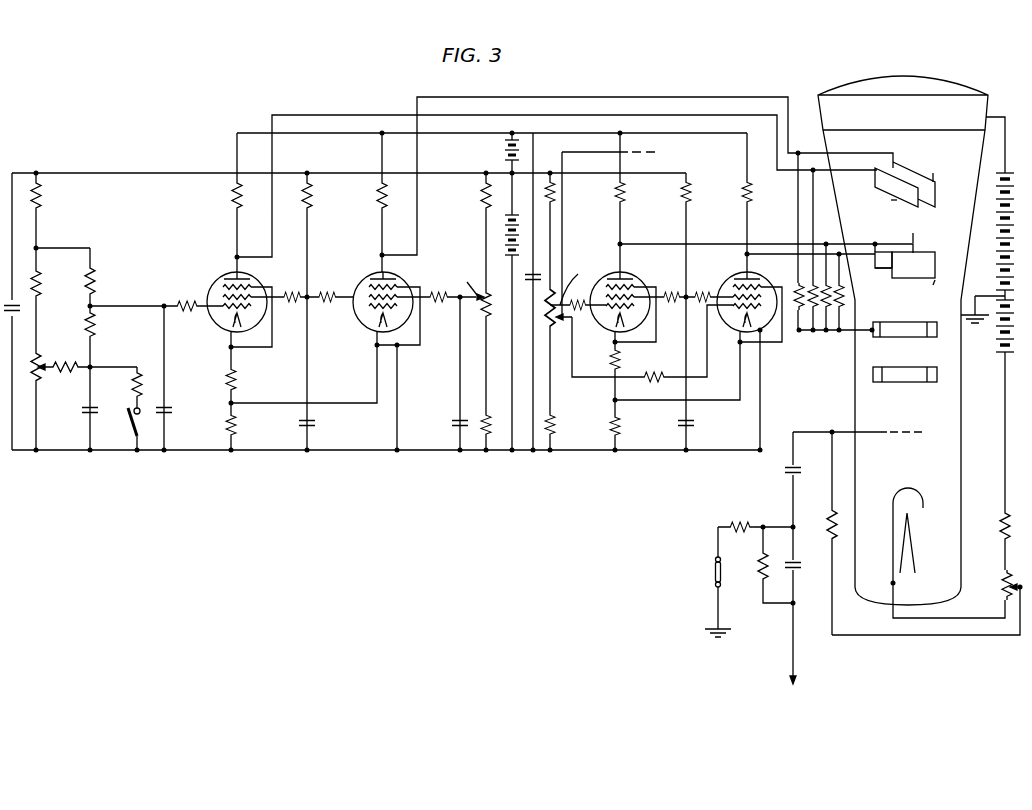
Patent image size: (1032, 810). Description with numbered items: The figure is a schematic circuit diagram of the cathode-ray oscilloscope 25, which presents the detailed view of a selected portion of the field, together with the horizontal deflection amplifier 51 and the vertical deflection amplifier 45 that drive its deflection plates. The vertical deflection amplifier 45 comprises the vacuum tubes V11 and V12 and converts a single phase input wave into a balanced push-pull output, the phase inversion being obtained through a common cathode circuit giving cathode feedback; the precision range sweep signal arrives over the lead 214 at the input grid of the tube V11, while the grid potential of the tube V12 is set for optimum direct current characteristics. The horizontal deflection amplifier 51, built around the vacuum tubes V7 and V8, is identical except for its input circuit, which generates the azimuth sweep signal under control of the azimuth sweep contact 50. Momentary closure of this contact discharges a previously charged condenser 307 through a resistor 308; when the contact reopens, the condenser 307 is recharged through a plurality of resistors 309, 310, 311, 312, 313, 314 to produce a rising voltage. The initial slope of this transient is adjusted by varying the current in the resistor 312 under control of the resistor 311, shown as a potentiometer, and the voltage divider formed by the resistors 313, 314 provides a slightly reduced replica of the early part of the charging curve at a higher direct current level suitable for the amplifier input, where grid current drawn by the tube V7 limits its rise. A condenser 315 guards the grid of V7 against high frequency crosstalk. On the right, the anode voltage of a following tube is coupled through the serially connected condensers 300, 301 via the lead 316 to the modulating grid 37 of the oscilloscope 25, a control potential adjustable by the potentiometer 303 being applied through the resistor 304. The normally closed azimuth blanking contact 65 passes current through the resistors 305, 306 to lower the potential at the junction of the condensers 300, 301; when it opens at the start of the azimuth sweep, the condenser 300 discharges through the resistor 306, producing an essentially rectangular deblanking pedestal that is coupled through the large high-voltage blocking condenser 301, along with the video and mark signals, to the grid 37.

The resistor 309 is at (40, 201).
The resistor 310 is at (42, 283).
The resistor 313 is at (96, 283).
The resistor 314 is at (96, 323).
The resistor 312 is at (77, 359).
The resistor 311 is at (42, 381).
The condenser 307 is at (82, 413).
The resistor 308 is at (142, 375).
The azimuth sweep contact 50 is at (130, 426).
The condenser 315 is at (171, 409).
The horizontal deflection amplifier 51 is at (448, 297).
The vertical deflection amplifier 45 is at (712, 315).
The lead 214 is at (657, 147).
The oscilloscope 25 is at (950, 410).
The modulating grid 37 is at (893, 430).
The condenser 301 is at (823, 455).
The resistor 304 is at (827, 512).
The condenser 300 is at (813, 558).
The resistor 305 is at (741, 521).
The resistor 306 is at (762, 572).
The azimuth blanking contact 65 is at (715, 573).
The lead 316 is at (797, 659).
The potentiometer 303 is at (1005, 576).
The vacuum tube V7 is at (224, 278).
The vacuum tube V8 is at (369, 278).
The vertical deflection amplifier tube V11 is at (627, 276).
The vacuum tube V12 is at (757, 276).